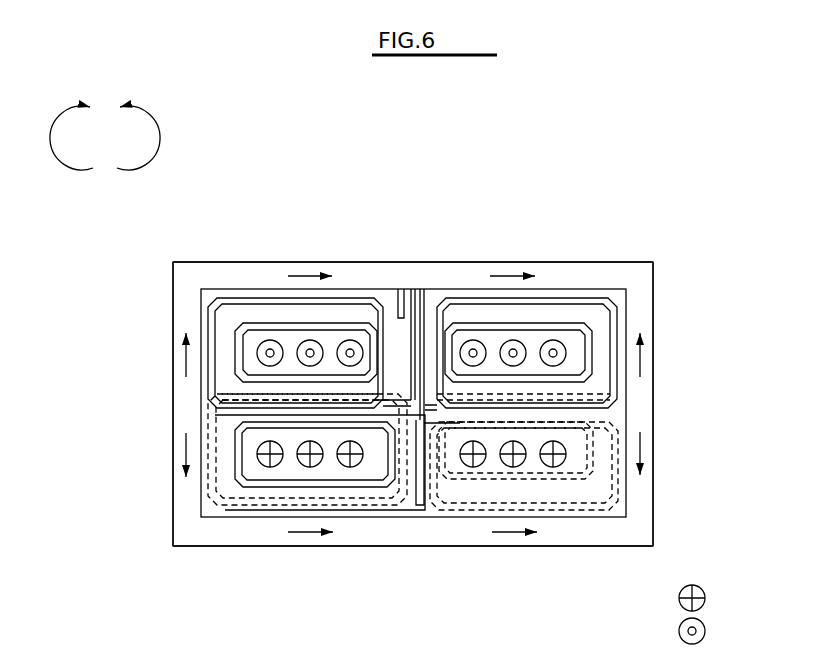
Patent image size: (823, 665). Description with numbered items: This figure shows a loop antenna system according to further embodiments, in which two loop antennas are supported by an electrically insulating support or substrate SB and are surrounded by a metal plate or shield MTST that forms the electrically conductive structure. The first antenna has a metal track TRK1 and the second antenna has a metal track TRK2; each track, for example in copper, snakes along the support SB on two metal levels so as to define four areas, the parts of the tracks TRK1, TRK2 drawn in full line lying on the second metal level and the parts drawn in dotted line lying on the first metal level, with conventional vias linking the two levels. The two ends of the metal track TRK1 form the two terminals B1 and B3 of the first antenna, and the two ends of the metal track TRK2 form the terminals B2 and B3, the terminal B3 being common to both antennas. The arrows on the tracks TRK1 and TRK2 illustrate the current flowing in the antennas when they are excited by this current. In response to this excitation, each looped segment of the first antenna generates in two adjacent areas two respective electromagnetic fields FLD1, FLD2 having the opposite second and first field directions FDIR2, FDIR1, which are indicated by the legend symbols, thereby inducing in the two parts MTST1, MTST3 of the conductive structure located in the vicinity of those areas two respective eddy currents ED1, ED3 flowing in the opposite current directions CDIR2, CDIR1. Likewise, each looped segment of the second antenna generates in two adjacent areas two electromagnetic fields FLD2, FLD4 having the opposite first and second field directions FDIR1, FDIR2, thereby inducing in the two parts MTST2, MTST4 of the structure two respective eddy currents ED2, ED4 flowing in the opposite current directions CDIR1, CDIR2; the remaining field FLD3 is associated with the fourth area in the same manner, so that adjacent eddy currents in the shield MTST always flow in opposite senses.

The first current direction CDIR1 is at (175, 138).
The second current direction CDIR2 is at (48, 166).
The first electromagnetic field FLD1 is at (310, 353).
The second electromagnetic field FLD2 is at (305, 460).
The third electromagnetic field FLD3 is at (518, 460).
The fourth electromagnetic field FLD4 is at (513, 353).
The metal track TRK1 is at (256, 298).
The metal track TRK2 is at (572, 298).
The eddy current ED1 is at (305, 276).
The eddy current ED2 is at (305, 537).
The eddy current ED3 is at (513, 537).
The eddy current ED4 is at (515, 277).
The terminal B1 is at (425, 300).
The terminal B2 is at (403, 290).
The common terminal B3 is at (413, 290).
The metal plate or shield MTST is at (650, 266).
The first part of the electrically conductive structure MTST1 is at (187, 301).
The second part of the electrically conductive structure MTST2 is at (187, 508).
The third part of the electrically conductive structure MTST3 is at (640, 508).
The fourth part of the electrically conductive structure MTST4 is at (640, 300).
The substrate SB is at (612, 504).
The first field direction FDIR1 is at (705, 598).
The second field direction FDIR2 is at (705, 631).